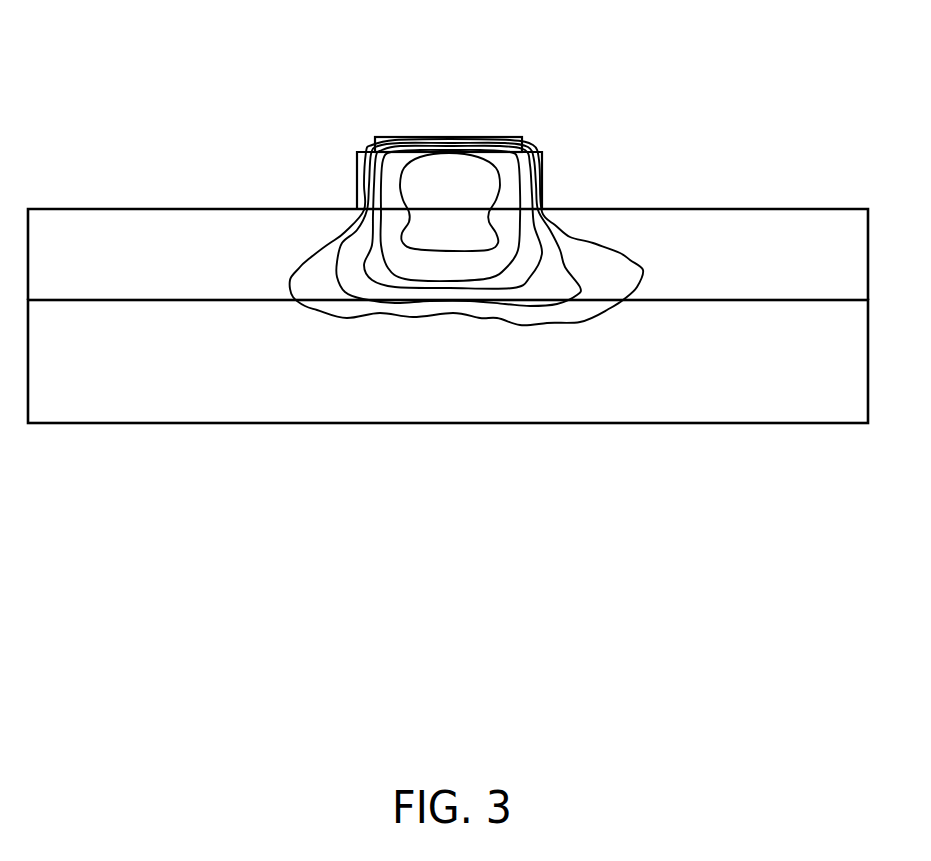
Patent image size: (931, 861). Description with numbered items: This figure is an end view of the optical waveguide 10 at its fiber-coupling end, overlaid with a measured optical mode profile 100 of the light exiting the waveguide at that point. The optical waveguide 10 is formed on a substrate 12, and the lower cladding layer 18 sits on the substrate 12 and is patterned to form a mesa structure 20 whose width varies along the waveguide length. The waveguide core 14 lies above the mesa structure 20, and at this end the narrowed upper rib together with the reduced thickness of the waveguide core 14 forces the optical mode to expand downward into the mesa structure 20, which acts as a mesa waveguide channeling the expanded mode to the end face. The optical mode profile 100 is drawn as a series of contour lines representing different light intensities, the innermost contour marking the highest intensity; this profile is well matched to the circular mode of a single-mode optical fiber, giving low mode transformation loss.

The optical waveguide 10 is at (449, 115).
The substrate 12 is at (60, 386).
The waveguide core 14 is at (522, 139).
The lower cladding layer 18 is at (60, 268).
The mesa structure 20 is at (543, 183).
The optical mode profile 100 is at (427, 277).